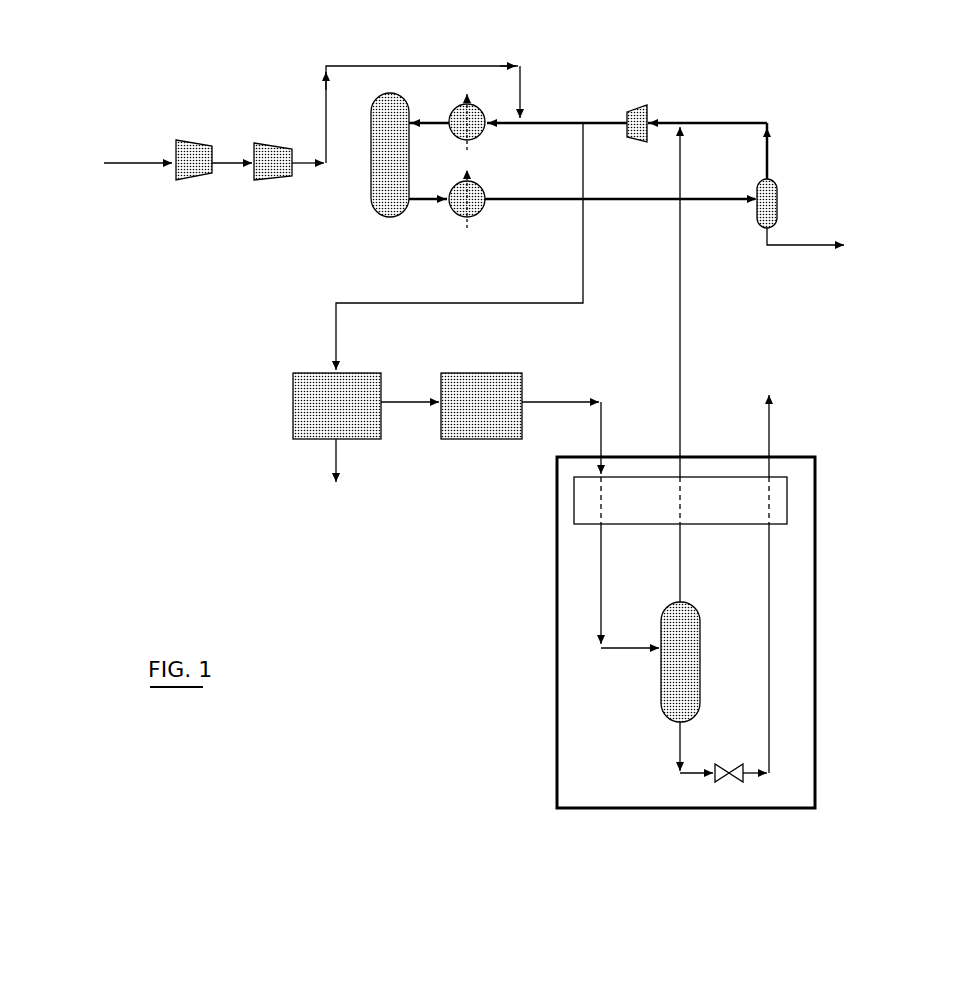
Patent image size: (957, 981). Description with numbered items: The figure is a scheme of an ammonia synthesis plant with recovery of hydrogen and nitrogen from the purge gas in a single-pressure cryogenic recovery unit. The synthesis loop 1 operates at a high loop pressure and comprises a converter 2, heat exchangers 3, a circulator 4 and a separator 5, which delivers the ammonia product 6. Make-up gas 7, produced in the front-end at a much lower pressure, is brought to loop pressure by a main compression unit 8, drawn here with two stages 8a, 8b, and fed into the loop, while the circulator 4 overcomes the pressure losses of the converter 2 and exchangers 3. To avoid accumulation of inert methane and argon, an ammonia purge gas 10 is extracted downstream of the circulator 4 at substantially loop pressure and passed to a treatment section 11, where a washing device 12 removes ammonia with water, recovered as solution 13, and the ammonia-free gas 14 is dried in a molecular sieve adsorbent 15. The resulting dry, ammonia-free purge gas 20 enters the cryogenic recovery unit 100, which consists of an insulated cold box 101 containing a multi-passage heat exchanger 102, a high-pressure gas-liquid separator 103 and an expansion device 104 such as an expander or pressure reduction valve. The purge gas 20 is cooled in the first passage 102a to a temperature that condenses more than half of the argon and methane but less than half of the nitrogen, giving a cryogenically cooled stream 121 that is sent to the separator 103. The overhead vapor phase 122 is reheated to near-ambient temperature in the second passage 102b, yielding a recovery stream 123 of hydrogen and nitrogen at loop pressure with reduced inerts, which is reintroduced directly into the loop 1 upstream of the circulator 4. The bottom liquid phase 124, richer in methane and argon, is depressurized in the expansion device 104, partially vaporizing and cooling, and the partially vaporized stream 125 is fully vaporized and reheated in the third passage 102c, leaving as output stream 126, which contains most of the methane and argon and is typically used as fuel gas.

The synthesis loop 1 is at (678, 72).
The converter 2 is at (376, 193).
The heat exchangers 3 is at (480, 132).
The circulator 4 is at (633, 110).
The separator 5 is at (774, 198).
The ammonia product 6 is at (815, 244).
The make-up gas 7 is at (138, 165).
The main compression unit 8 is at (348, 160).
The first compression stage 8a is at (196, 150).
The second compression stage 8b is at (272, 152).
The ammonia purge gas 10 is at (585, 250).
The purge gas treatment section 11 is at (422, 444).
The washing device 12 is at (293, 410).
The ammonia solution 13 is at (333, 460).
The ammonia-free gas 14 is at (405, 398).
The molecular sieve adsorbent 15 is at (497, 378).
The dry ammonia-free purge gas 20 is at (570, 398).
The cryogenic recovery unit 100 is at (702, 490).
The insulated cold box 101 is at (557, 668).
The multi-passage heat exchanger 102 is at (672, 485).
The first passage 102a is at (606, 497).
The second passage 102b is at (683, 497).
The third passage 102c is at (772, 500).
The high-pressure gas-liquid separator 103 is at (663, 692).
The expansion device 104 is at (737, 784).
The cryogenically cooled stream 121 is at (601, 574).
The vapor phase 122 is at (683, 562).
The recovery stream 123 is at (681, 330).
The liquid phase 124 is at (683, 742).
The partially vaporized stream 125 is at (768, 652).
The output stream 126 is at (770, 410).